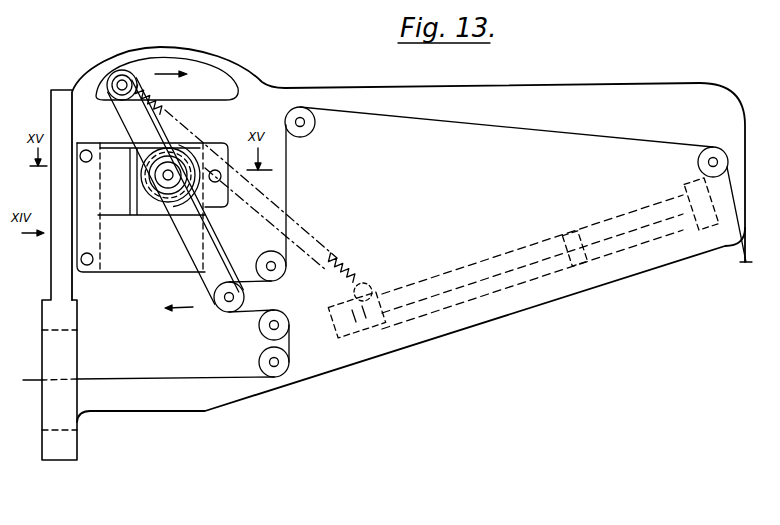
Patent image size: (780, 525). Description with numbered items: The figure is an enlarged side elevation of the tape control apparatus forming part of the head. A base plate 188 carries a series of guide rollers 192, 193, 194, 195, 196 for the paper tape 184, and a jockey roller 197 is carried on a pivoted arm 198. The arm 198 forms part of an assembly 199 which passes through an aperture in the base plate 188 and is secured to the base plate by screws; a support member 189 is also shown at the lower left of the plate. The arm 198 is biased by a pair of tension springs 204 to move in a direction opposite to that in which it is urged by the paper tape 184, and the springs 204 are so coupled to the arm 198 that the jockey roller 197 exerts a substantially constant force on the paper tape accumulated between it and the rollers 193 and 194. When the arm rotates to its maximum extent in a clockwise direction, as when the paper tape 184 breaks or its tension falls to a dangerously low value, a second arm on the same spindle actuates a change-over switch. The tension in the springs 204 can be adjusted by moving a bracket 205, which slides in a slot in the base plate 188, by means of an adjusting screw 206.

The paper tape 184 is at (538, 130).
The base plate 188 is at (408, 234).
The support bar 189 is at (68, 450).
The guide roller 192 is at (289, 367).
The guide roller 193 is at (282, 327).
The guide roller 194 is at (281, 269).
The guide roller 195 is at (304, 109).
The guide roller 196 is at (717, 156).
The jockey roller 197 is at (230, 309).
The pivoted arm 198 is at (207, 258).
The assembly 199 is at (128, 287).
The tension springs 204 is at (302, 228).
The bracket 205 is at (381, 326).
The adjusting screw 206 is at (689, 231).